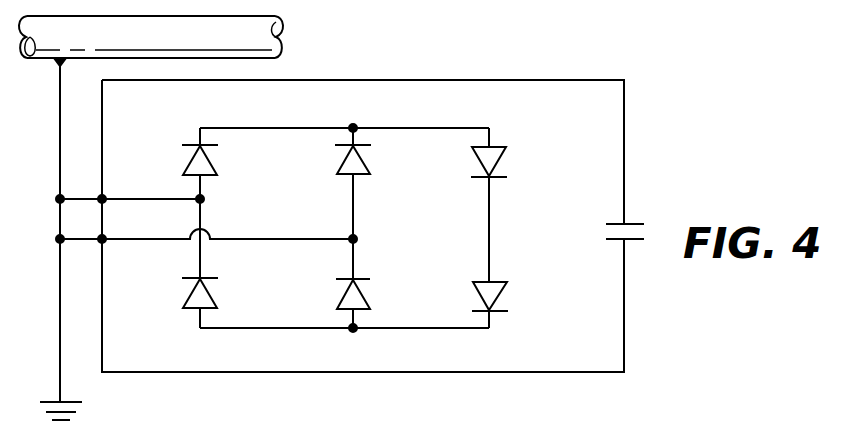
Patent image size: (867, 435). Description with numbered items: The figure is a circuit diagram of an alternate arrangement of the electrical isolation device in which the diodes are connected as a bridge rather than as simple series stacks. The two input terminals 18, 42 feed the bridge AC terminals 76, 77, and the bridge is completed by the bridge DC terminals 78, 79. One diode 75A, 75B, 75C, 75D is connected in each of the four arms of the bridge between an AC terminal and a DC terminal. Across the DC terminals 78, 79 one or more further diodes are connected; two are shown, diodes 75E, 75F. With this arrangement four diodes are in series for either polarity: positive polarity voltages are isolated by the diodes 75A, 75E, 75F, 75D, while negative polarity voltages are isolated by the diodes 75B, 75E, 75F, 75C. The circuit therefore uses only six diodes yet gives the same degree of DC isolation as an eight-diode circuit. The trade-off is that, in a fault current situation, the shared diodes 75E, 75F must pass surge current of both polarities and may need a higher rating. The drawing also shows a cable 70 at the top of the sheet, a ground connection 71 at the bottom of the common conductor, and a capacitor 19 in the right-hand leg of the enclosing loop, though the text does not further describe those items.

The cable 70 is at (277, 20).
The ground 71 is at (82, 403).
The input terminal 18 is at (60, 197).
The input terminal 42 is at (60, 240).
The capacitor 19 is at (638, 223).
The diode 75A is at (258, 152).
The diode 75B is at (372, 162).
The diode 75C is at (258, 278).
The diode 75D is at (366, 294).
The diode 75E is at (508, 164).
The diode 75F is at (508, 292).
The bridge AC terminal 76 is at (203, 200).
The bridge AC terminal 77 is at (354, 236).
The bridge DC terminal 78 is at (390, 131).
The bridge DC terminal 79 is at (439, 327).